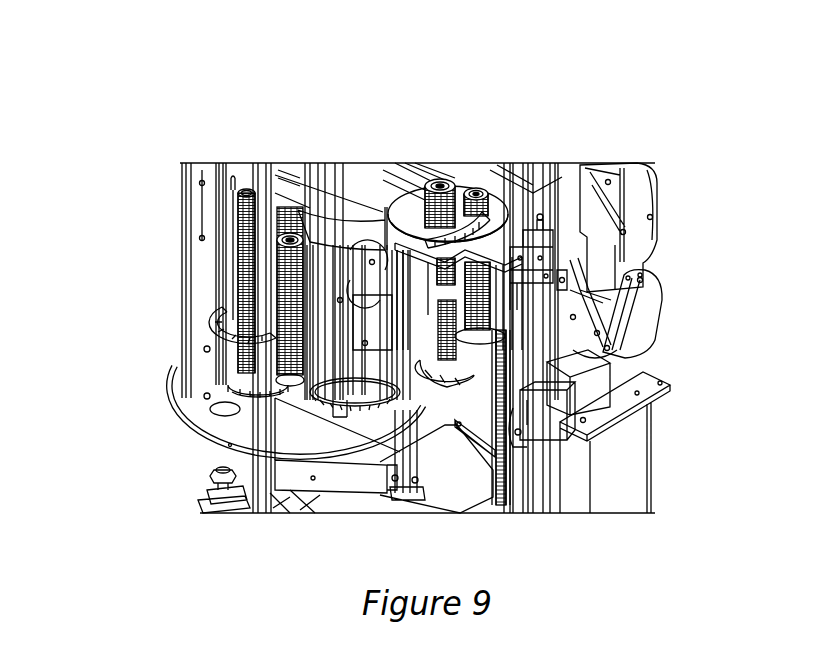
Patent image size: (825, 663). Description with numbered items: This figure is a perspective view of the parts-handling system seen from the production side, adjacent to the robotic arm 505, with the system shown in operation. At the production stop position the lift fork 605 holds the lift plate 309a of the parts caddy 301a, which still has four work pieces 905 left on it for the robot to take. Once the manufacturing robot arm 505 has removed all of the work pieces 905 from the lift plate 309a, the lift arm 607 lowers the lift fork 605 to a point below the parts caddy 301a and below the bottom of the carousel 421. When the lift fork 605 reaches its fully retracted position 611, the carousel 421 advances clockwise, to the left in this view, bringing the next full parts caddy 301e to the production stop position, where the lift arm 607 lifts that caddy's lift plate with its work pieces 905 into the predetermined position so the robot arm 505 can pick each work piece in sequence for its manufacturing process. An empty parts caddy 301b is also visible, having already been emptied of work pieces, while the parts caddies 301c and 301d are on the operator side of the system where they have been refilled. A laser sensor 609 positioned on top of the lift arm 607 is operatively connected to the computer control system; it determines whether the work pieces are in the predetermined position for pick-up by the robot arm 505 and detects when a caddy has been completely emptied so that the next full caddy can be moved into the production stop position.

The parts caddy 301a is at (330, 460).
The empty parts caddy 301b is at (330, 381).
The parts caddy 301c is at (248, 382).
The parts caddy 301d is at (246, 340).
The next full parts caddy 301e is at (633, 291).
The carousel 421 is at (398, 334).
The work pieces 905 is at (436, 262).
The lift plate 309a is at (420, 232).
The lift fork 605 is at (495, 200).
The laser sensor 609 is at (560, 215).
The robotic arm 505 is at (655, 192).
The lift arm 607 is at (607, 350).
The fully retracted position 611 is at (460, 430).